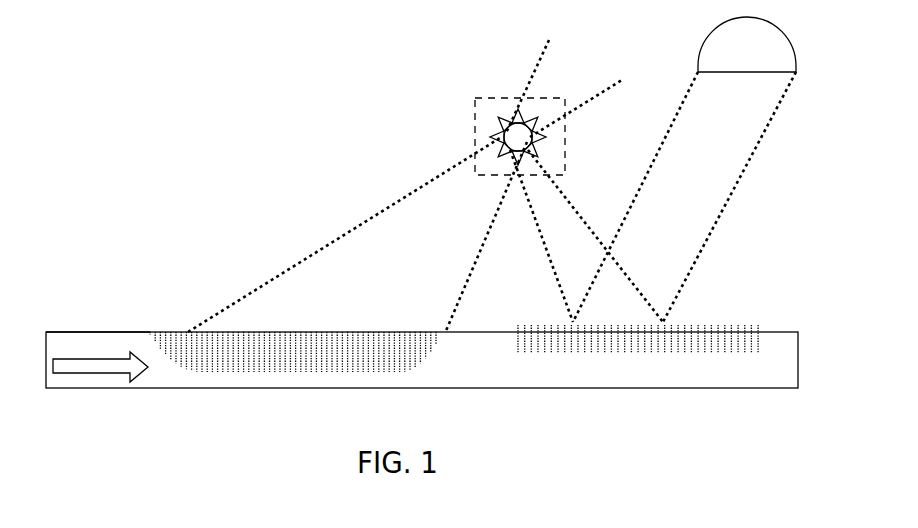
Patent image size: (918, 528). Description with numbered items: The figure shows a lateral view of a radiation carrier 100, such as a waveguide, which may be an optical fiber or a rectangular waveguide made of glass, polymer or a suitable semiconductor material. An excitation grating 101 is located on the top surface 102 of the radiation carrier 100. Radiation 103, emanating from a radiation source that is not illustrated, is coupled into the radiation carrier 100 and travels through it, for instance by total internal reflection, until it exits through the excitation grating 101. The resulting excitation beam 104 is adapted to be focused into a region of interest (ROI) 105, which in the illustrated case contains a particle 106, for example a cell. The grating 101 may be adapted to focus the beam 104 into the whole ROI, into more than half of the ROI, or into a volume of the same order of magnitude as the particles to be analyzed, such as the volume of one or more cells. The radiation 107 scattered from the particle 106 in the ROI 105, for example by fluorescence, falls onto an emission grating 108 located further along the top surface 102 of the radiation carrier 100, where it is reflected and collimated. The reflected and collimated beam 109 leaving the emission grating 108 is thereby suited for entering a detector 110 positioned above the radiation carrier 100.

The radiation carrier 100 is at (510, 381).
The excitation grating 101 is at (157, 330).
The top surface 102 is at (100, 330).
The radiation 103 is at (76, 350).
The excitation beam 104 is at (247, 288).
The region of interest (ROI) 105 is at (474, 109).
The particle 106 is at (495, 112).
The scattered radiation 107 is at (583, 220).
The emission grating 108 is at (740, 322).
The reflected and collimated beam 109 is at (728, 180).
The detector 110 is at (773, 66).